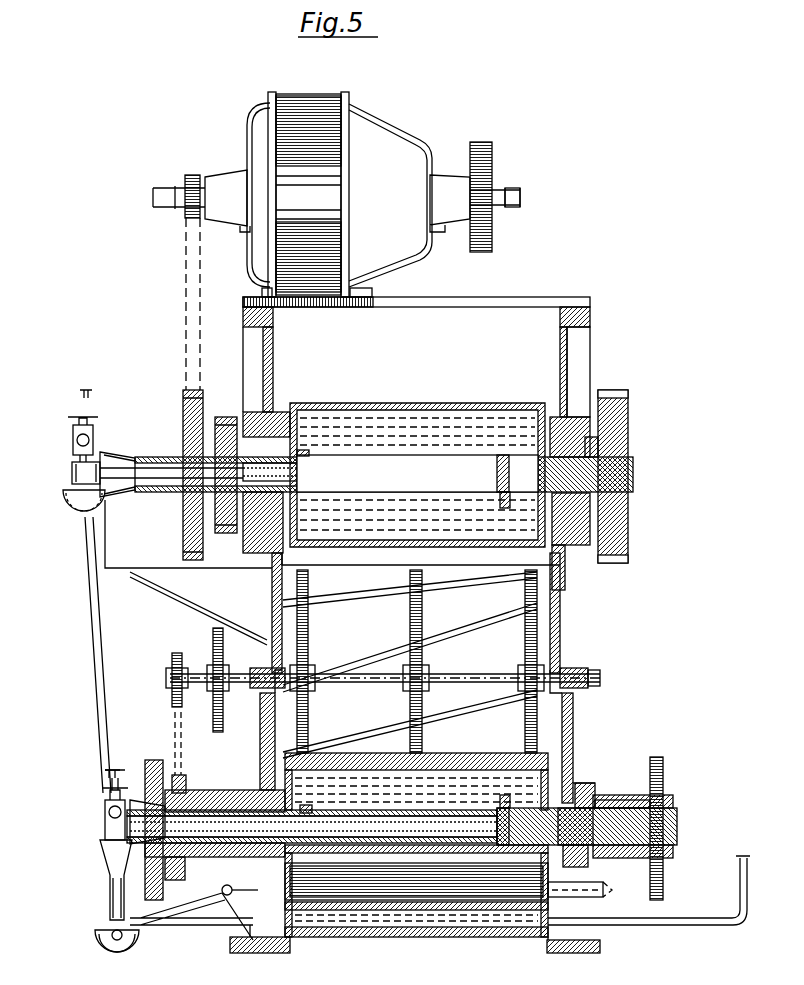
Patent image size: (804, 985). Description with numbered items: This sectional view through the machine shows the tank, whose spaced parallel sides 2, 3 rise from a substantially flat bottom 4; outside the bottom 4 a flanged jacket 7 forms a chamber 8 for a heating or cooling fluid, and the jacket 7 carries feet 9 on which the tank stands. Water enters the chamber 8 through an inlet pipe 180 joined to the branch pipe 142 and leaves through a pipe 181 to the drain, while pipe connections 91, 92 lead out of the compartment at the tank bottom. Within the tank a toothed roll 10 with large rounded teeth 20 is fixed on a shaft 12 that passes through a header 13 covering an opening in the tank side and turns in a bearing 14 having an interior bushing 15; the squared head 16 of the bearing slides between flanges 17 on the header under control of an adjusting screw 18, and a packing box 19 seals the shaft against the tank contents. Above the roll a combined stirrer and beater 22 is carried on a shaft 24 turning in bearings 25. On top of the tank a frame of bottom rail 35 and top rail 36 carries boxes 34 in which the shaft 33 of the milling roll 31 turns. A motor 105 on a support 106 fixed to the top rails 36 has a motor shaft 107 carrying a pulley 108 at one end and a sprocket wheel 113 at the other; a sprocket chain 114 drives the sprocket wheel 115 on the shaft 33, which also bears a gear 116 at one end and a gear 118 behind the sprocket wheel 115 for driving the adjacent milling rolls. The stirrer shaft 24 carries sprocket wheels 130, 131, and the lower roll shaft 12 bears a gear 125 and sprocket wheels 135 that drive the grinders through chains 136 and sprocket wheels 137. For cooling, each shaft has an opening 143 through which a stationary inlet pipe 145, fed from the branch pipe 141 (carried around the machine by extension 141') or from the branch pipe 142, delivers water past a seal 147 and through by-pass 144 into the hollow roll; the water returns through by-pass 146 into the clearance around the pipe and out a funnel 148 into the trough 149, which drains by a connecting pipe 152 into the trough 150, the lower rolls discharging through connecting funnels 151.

The motor 105 is at (336, 194).
The sprocket wheel 113 is at (191, 175).
The pulley 108 is at (486, 157).
The motor shaft 107 is at (520, 197).
The sprocket chain 114 is at (184, 313).
The support 106 is at (568, 372).
The top rail 36 is at (278, 416).
The bottom rail 35 is at (250, 540).
The box 34 is at (603, 440).
The gear 116 is at (630, 445).
The shaft 33 is at (437, 456).
The opening 143 is at (375, 462).
The milling roll 31 is at (418, 404).
The by-pass 146 is at (304, 450).
The by-pass 144 is at (503, 455).
The seal 147 is at (503, 492).
The sprocket wheel 115 is at (183, 400).
The gear 118 is at (225, 417).
The inlet pipe 145 is at (140, 465).
The branch pipe 141 is at (132, 473).
The extension 141' is at (60, 439).
The funnel 148 is at (118, 460).
The trough 149 is at (65, 512).
The connecting pipe 152 is at (100, 738).
The side 2 is at (272, 645).
The side 3 is at (560, 630).
The header 13 is at (260, 748).
The combined stirrer and beater 22 is at (310, 645).
The shaft 24 is at (385, 684).
The bearing 25 is at (255, 688).
The sprocket wheel 131 is at (213, 640).
The sprocket wheel 130 is at (172, 664).
The chain 136 is at (182, 762).
The sprocket wheel 137 is at (186, 783).
The combined grinding and milling roll 10 is at (370, 768).
The shaft 12 is at (677, 828).
The adjusting screw 18 is at (400, 816).
The bushing 15 is at (215, 808).
The bearing 14 is at (215, 862).
The packing box 19 is at (575, 800).
The flange 17 is at (575, 785).
The head 16 is at (640, 793).
The sprocket wheel 135 is at (663, 770).
The gear 125 is at (163, 885).
The teeth 20 is at (338, 900).
The bottom 4 is at (372, 910).
The flanged jacket 7 is at (440, 937).
The chamber 8 is at (475, 925).
The feet 9 is at (245, 953).
The pipe connection 92 is at (605, 889).
The inlet pipe 180 is at (688, 918).
The branch pipe 142 is at (105, 822).
The connecting funnel 151 is at (110, 882).
The trough 150 is at (95, 940).
The pipe 181 is at (192, 926).
The pipe connection 91 is at (224, 886).